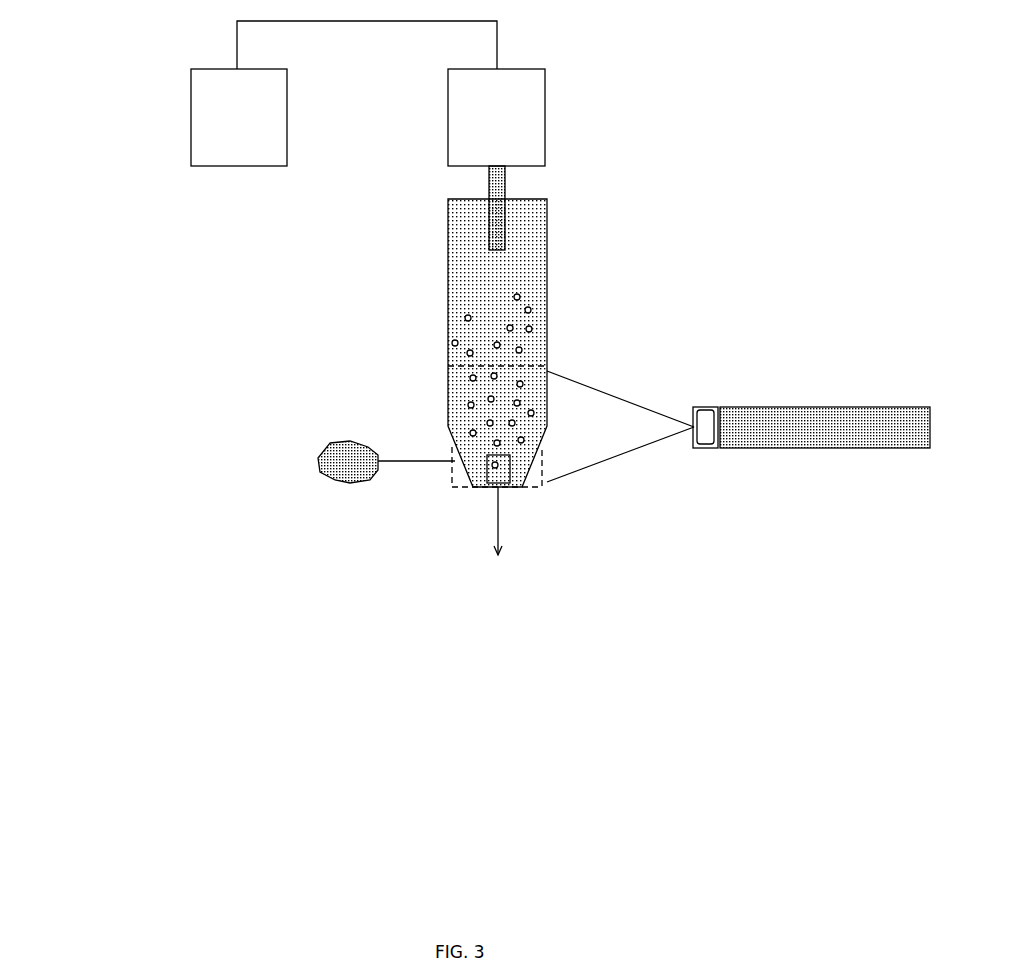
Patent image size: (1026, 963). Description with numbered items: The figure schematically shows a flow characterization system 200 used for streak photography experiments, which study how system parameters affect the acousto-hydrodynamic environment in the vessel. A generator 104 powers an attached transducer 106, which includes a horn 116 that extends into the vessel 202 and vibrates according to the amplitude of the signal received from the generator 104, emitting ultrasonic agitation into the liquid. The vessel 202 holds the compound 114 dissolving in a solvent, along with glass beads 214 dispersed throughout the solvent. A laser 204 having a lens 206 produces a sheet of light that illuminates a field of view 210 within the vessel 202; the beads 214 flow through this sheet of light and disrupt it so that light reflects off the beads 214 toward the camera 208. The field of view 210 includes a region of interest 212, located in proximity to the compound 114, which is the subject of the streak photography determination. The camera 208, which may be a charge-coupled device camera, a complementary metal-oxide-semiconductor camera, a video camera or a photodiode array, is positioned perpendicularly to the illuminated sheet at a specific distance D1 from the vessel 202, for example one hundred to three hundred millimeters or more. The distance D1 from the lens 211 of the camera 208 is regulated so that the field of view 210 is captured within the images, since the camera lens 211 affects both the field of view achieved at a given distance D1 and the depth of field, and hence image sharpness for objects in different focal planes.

The flow characterization system 200 is at (98, 138).
The generator 104 is at (199, 89).
The transducer 106 is at (532, 85).
The horn 116 is at (498, 233).
The vessel 202 is at (529, 264).
The compound 114 is at (446, 342).
The field of view 210 is at (446, 406).
The beads 214 is at (466, 316).
The region of interest 212 is at (500, 478).
The camera 208 is at (347, 485).
The lens 211 is at (322, 452).
The distance D1 is at (400, 462).
The lens 206 is at (710, 435).
The laser 204 is at (845, 440).